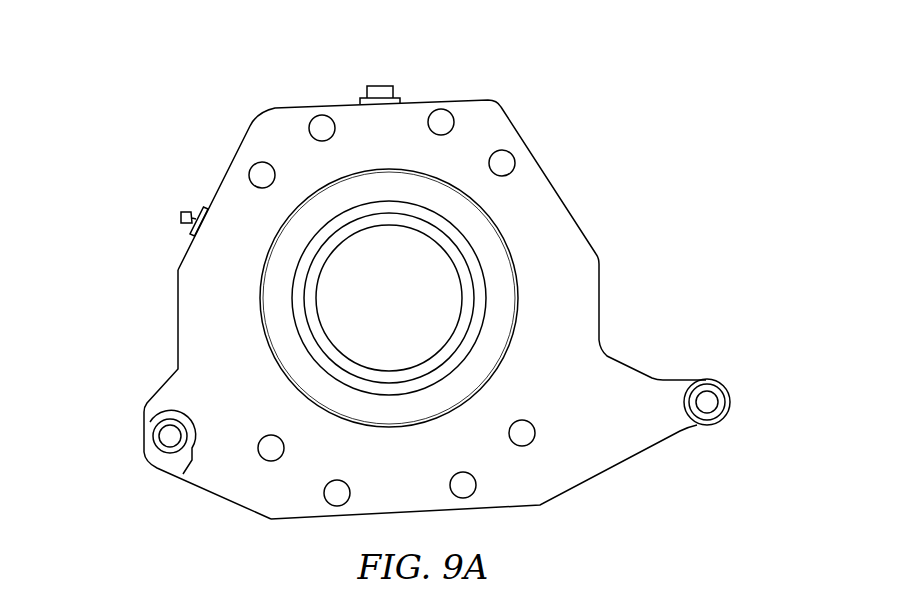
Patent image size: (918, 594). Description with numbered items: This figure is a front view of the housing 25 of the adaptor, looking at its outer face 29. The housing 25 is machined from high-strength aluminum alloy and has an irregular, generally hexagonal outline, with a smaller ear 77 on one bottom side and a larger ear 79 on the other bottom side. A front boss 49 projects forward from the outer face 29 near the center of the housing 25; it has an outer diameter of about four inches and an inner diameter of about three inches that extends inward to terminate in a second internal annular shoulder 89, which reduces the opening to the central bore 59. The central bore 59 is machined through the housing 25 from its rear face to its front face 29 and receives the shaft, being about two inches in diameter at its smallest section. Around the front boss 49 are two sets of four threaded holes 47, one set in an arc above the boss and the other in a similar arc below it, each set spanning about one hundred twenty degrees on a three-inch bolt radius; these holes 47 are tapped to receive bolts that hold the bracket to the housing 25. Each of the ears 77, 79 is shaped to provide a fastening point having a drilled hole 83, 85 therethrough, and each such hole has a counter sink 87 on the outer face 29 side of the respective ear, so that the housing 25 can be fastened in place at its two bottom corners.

The housing 25 is at (562, 93).
The outer face 29 is at (537, 361).
The threaded holes 47 is at (322, 126).
The front boss 49 is at (487, 246).
The central bore 59 is at (389, 298).
The smaller ear 77 is at (188, 398).
The larger ear 79 is at (625, 396).
The drilled hole 83 is at (190, 455).
The drilled hole 85 is at (700, 400).
The counter sink 87 is at (721, 412).
The second internal annular shoulder 89 is at (407, 387).